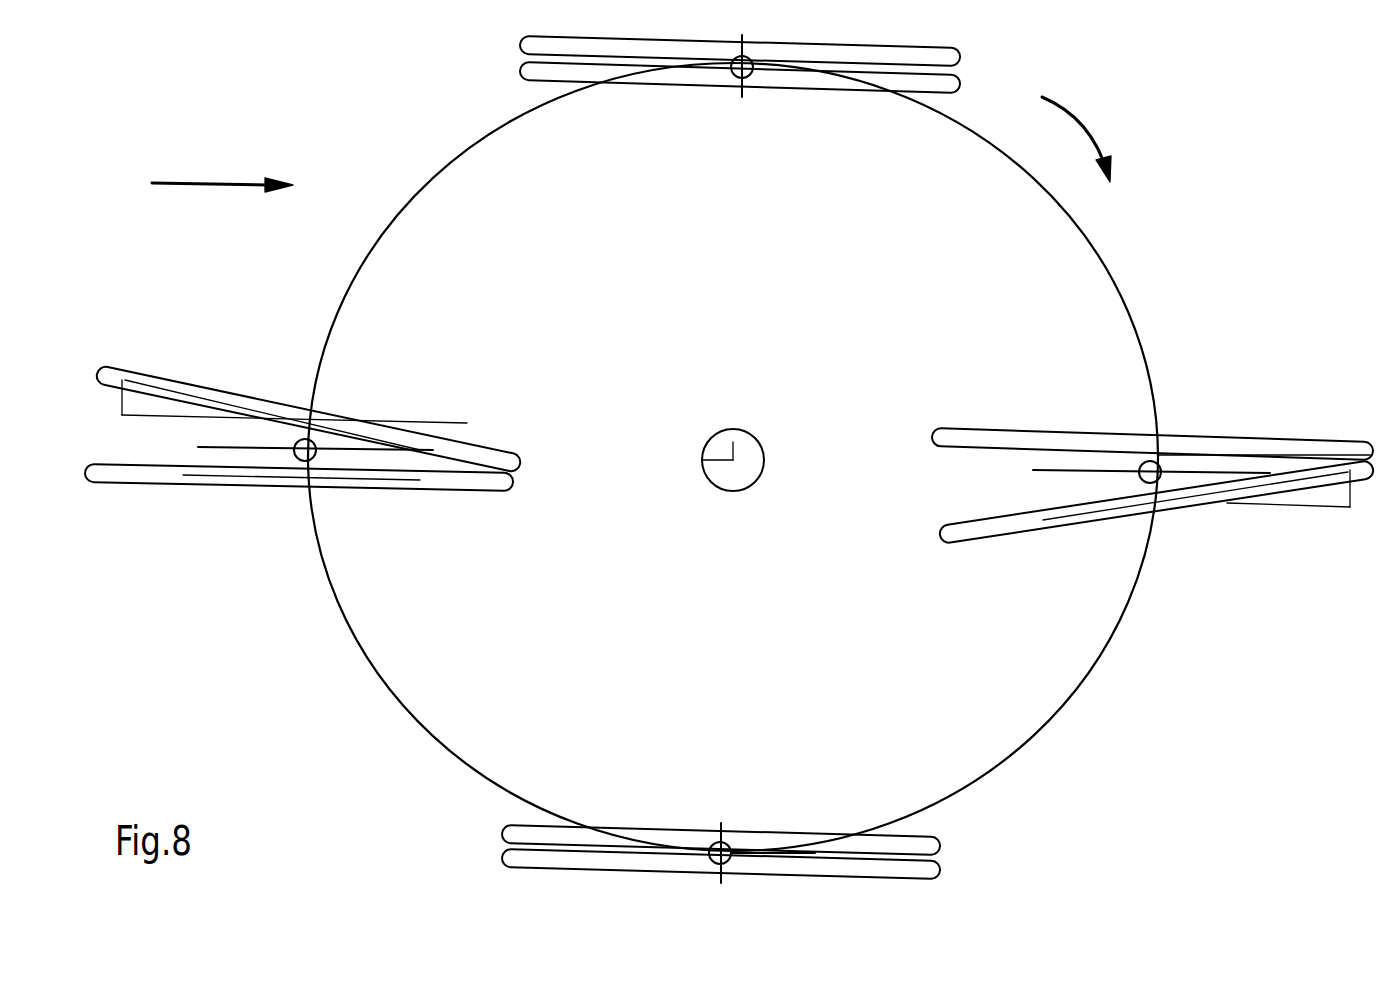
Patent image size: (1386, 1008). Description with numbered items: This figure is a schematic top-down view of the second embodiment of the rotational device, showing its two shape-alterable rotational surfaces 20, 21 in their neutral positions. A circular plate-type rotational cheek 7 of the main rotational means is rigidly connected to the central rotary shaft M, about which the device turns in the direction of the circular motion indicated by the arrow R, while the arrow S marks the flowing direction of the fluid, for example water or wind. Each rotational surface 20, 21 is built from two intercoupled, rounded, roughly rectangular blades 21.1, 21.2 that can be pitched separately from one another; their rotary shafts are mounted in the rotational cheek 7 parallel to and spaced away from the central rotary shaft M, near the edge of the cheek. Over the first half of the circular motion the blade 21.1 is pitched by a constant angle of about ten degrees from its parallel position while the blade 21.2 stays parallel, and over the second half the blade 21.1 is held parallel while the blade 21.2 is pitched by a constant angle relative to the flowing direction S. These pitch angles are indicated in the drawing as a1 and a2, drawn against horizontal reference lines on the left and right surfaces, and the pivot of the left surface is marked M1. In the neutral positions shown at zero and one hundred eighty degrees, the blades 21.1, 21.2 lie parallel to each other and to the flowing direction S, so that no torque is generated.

The rotational cheek 7 is at (462, 215).
The rotational surface 20 is at (170, 485).
The rotational surface 21 is at (1210, 502).
The blade 21.1 is at (1265, 488).
The blade 21.2 is at (1187, 438).
The central rotary shaft M is at (747, 477).
The pivot point of blade pair M1 is at (267, 438).
The flowing direction of the fluid S is at (222, 166).
The direction of the circular motion R is at (1076, 133).
The angle a1 of blade a1 is at (282, 401).
The angle a2 of blade a2 is at (1303, 492).